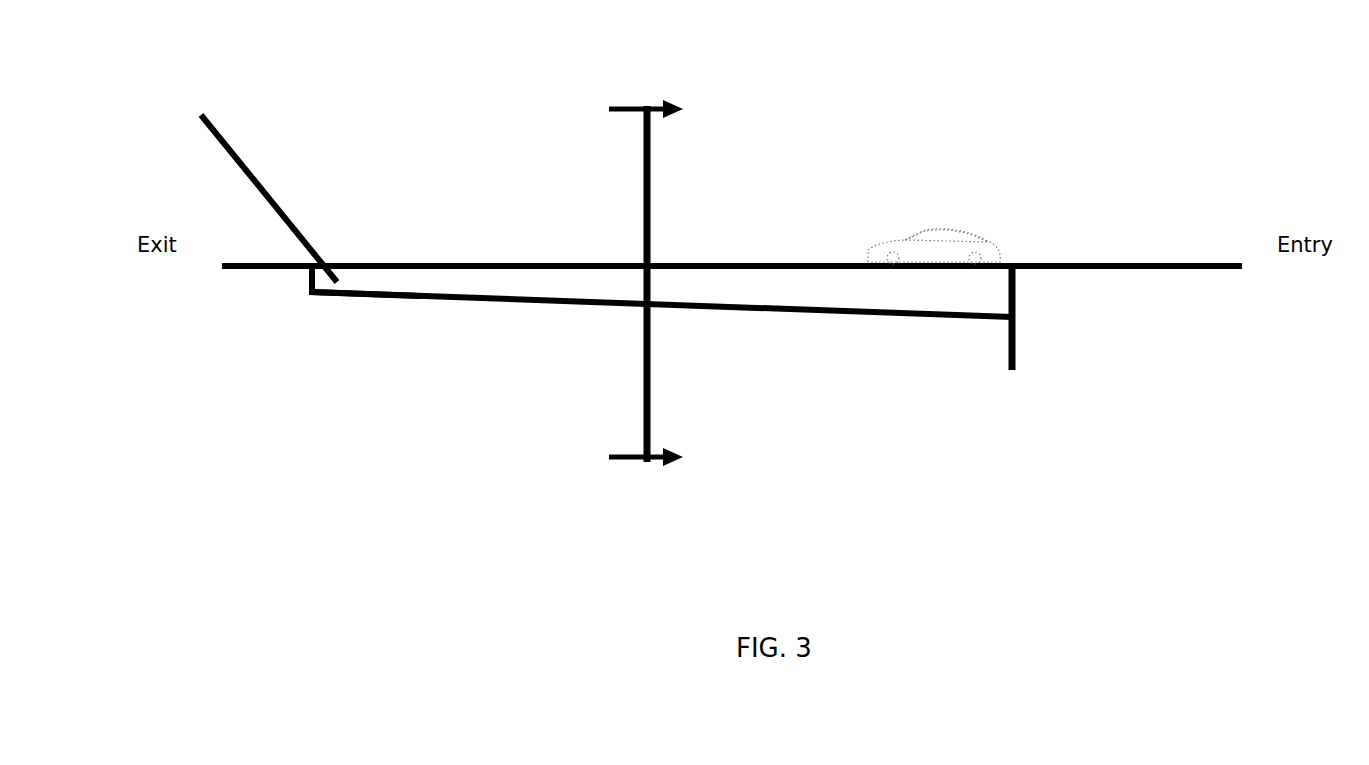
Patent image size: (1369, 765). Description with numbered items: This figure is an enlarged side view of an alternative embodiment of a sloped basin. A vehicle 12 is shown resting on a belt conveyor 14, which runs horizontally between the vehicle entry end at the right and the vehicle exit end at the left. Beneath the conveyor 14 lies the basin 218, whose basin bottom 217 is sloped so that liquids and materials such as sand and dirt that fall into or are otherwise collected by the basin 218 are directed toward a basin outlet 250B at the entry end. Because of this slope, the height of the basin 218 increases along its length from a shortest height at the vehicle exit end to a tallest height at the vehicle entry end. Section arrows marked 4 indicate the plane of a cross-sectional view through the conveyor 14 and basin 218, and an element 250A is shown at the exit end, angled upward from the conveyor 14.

The section line 4- 4 is at (646, 281).
The vehicle 12 is at (946, 196).
The conveyor 14 is at (1199, 248).
The basin bottom 217 is at (495, 322).
The basin 218 is at (371, 327).
The exit gate 250A is at (302, 189).
The basin outlet 250B is at (1032, 332).